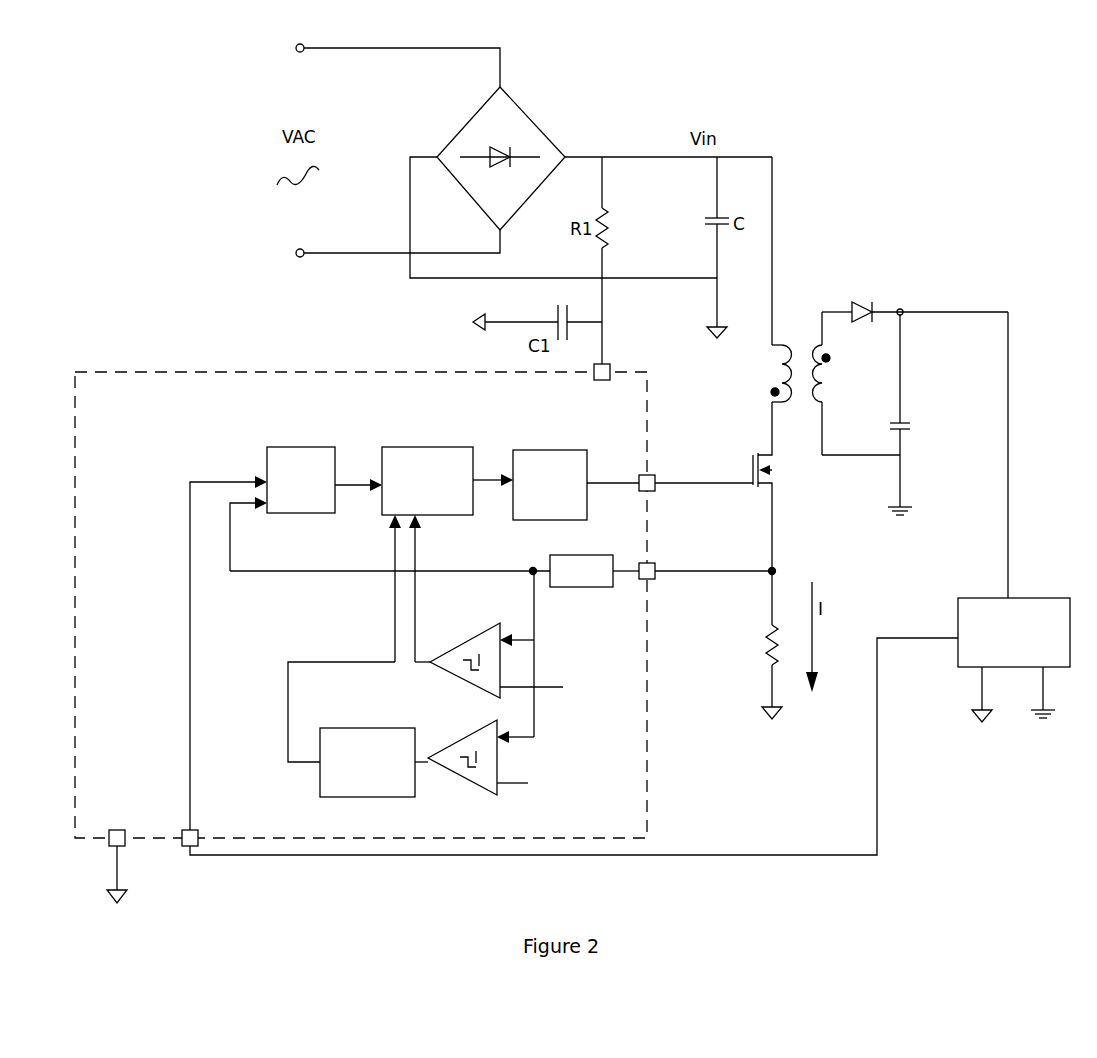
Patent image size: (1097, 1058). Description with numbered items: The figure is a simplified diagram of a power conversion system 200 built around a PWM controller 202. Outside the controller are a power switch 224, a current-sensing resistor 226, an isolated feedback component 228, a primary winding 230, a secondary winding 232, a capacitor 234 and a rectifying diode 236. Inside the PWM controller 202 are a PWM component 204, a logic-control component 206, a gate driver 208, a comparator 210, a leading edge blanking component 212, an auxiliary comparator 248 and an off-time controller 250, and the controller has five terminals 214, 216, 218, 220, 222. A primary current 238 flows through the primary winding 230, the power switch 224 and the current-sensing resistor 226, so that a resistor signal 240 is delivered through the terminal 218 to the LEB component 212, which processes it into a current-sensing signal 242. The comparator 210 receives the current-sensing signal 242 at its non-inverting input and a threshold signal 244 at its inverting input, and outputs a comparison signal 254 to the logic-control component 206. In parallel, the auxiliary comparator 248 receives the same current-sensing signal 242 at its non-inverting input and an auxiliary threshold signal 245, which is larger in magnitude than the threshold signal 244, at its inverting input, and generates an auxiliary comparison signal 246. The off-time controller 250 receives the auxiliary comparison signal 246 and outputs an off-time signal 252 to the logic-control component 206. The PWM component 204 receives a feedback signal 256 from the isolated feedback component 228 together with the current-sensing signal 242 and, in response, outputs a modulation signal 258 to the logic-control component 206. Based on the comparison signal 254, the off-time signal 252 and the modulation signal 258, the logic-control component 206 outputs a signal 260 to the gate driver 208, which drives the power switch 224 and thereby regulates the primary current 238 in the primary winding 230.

The power conversion system 200 is at (178, 160).
The PWM controller 202 is at (80, 372).
The PWM component 204 is at (293, 447).
The logic-control component 206 is at (420, 447).
The gate driver 208 is at (560, 450).
The comparator 210 is at (492, 625).
The leading edge blanking (LEB) component 212 is at (581, 587).
The terminal 214 is at (600, 382).
The terminal 216 is at (655, 478).
The terminal 218 is at (655, 566).
The terminal 220 is at (183, 850).
The terminal 222 is at (122, 830).
The power switch 224 is at (776, 488).
The current-sensing resistor 226 is at (768, 656).
The isolated feedback component 228 is at (1025, 598).
The primary winding 230 is at (776, 344).
The secondary winding 232 is at (815, 400).
The capacitor 234 is at (902, 420).
The rectifying diode 236 is at (866, 302).
The primary current 238 is at (775, 556).
The resistor signal 240 is at (713, 556).
The current-sensing signal 242 is at (536, 568).
The threshold signal 244 is at (548, 689).
The auxiliary threshold signal 245 is at (514, 785).
The auxiliary comparison signal 246 is at (428, 752).
The auxiliary comparator 248 is at (458, 778).
The off-time controller 250 is at (325, 797).
The off-time signal 252 is at (322, 662).
The comparison signal 254 is at (417, 565).
The feedback signal 256 is at (340, 855).
The modulation signal 258 is at (357, 484).
The signal 260 is at (490, 480).